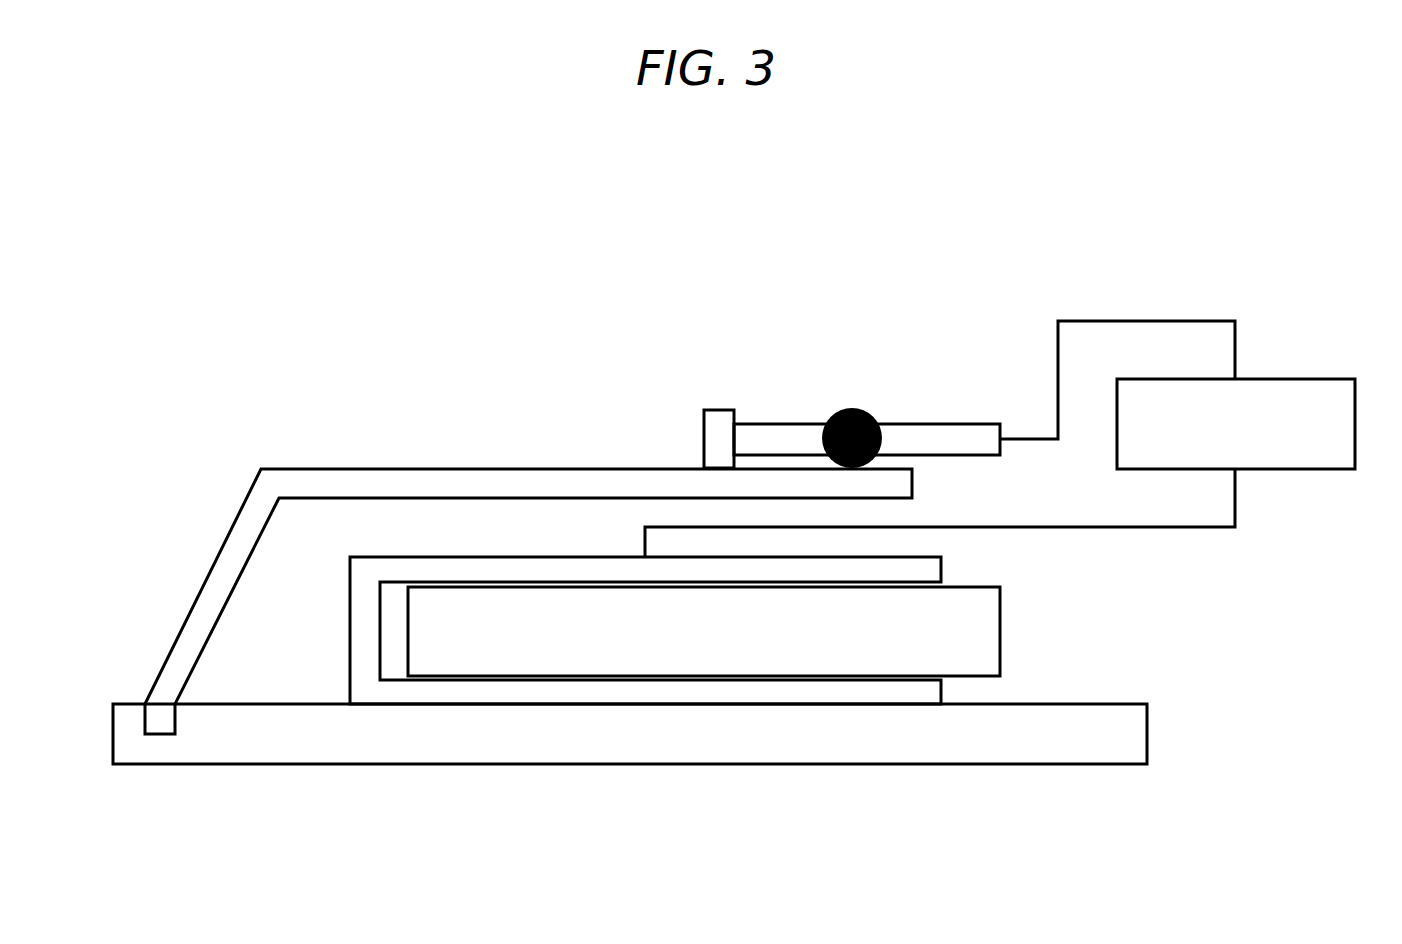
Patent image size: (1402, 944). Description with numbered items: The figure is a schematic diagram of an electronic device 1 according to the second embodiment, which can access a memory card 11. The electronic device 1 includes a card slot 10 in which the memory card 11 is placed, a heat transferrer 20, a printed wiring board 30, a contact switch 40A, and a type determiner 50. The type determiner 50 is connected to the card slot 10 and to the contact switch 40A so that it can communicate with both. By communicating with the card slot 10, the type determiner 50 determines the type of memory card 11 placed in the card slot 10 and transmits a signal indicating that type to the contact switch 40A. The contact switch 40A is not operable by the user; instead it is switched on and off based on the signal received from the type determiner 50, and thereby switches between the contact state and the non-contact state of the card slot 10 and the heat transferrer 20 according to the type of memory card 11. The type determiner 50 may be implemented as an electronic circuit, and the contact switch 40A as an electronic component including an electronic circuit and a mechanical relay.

The electronic device 1 is at (528, 294).
The card slot 10 is at (350, 615).
The memory card 11 is at (1000, 617).
The heat transferrer 20 is at (350, 468).
The printed wiring board 30 is at (851, 764).
The contact switch 40A is at (940, 424).
The type determiner 50 is at (1265, 379).